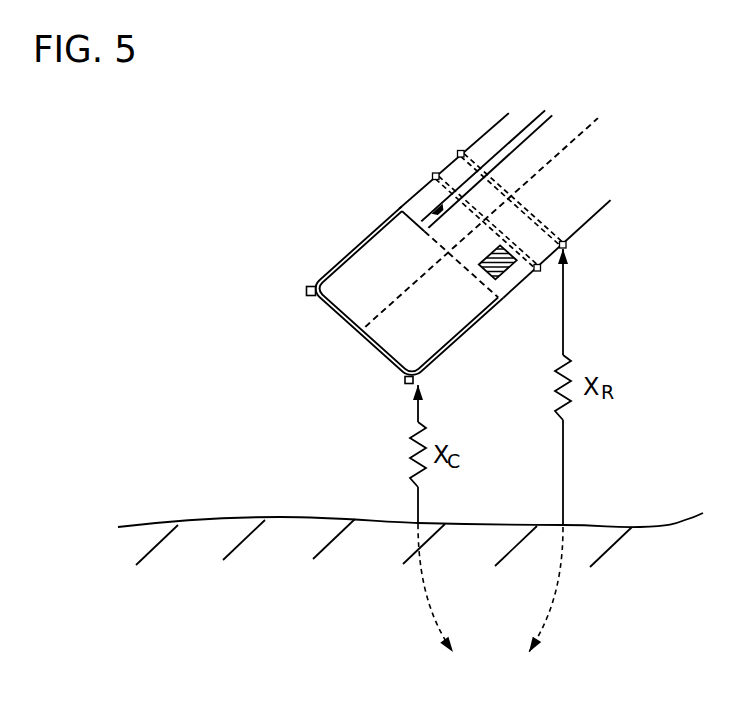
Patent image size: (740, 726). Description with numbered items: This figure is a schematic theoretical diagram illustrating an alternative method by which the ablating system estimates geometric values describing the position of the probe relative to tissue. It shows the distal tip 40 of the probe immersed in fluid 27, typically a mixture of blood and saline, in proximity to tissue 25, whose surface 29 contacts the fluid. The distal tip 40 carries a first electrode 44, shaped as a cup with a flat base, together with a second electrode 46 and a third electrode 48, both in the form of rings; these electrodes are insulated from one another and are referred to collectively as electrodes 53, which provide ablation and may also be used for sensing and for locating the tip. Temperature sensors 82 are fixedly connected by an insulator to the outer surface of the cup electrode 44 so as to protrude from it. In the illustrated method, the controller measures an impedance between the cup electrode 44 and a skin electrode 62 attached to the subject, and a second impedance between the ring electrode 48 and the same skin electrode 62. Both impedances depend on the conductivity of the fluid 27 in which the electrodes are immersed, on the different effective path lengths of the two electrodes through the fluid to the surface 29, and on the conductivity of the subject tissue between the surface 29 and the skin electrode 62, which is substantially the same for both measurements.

The distal tip 40 is at (277, 200).
The electrodes 53 is at (305, 152).
The third electrode 48 is at (458, 154).
The second electrode 46 is at (433, 177).
The first electrode 44 is at (325, 274).
The fluid 27 is at (256, 349).
The temperature sensors 82 is at (306, 291).
The surface 29 is at (140, 525).
The tissue 25 is at (182, 547).
The skin electrode 62 is at (493, 605).